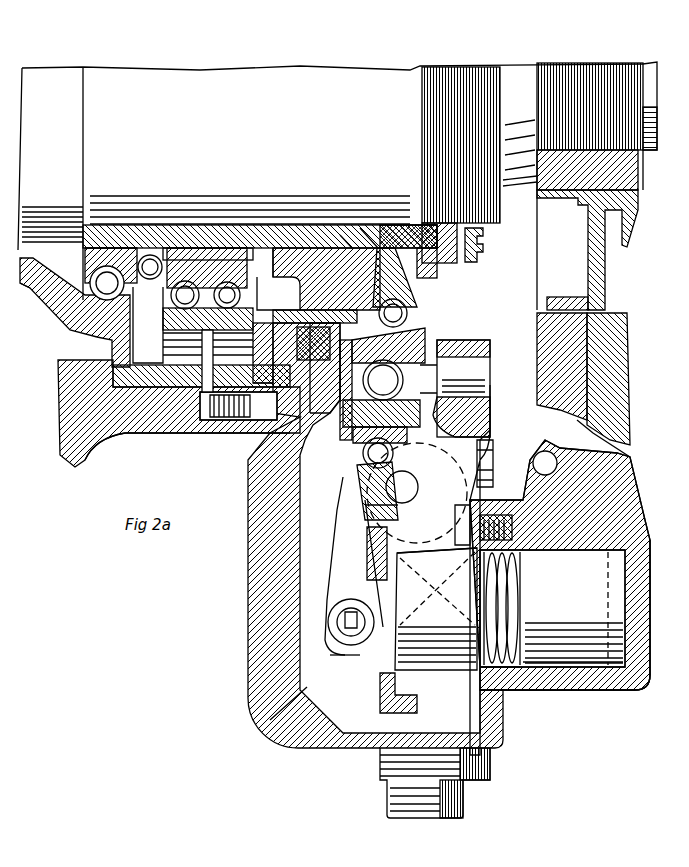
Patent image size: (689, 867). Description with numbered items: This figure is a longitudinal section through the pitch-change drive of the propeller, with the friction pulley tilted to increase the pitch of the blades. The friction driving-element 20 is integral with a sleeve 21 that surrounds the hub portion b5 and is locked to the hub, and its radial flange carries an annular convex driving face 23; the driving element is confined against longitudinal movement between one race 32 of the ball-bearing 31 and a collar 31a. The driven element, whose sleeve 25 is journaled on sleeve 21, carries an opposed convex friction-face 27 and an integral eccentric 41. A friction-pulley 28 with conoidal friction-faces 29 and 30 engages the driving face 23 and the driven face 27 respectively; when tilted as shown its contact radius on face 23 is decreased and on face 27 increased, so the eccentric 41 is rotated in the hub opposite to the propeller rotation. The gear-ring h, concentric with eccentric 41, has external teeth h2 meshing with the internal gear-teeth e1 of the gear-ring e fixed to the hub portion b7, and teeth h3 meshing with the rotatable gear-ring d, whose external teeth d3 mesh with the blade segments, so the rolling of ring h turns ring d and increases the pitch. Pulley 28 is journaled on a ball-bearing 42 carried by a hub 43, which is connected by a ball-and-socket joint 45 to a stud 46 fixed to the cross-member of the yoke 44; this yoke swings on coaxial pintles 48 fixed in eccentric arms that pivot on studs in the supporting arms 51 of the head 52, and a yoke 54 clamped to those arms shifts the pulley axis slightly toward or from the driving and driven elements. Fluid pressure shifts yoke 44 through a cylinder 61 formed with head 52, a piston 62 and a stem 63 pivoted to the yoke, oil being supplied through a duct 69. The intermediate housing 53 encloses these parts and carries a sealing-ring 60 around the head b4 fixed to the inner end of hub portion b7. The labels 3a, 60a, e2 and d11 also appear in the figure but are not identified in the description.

The hub portion b5 is at (337, 259).
The friction driving-element 20 is at (395, 236).
The sleeve 21 is at (388, 232).
The friction-face 27 is at (356, 228).
The conoidal friction-face 29 is at (346, 238).
The collar 31a is at (470, 260).
The head b4 is at (262, 290).
The driving face 23 is at (425, 300).
The hub 43 is at (425, 345).
The universal or ball-and-socket joint 45 is at (381, 401).
The stud 46 is at (455, 388).
The yoke 44 is at (485, 340).
The duct 69 is at (540, 452).
The supporting arms 51 is at (478, 512).
The piston 62 is at (553, 608).
The sealing-ring 60 is at (565, 622).
The cylinder 61 is at (512, 690).
The head 52 is at (592, 690).
The intermediate housing 53 is at (250, 583).
The yoke 54 is at (402, 695).
The ball-bearing 42 is at (362, 455).
The friction-pulley 28 is at (372, 470).
The conoidal friction-face 30 is at (362, 523).
The pintles 48 is at (417, 493).
The stem 63 is at (420, 630).
The plunger head 60a is at (425, 608).
The gear-ring d is at (100, 330).
The external teeth d3 is at (28, 292).
The ball-bearing 31 is at (135, 245).
The race 32 is at (102, 230).
The ball 3a is at (157, 248).
The eccentric 41 is at (205, 258).
The sleeve 25 is at (262, 247).
The gear-ring h is at (160, 328).
The teeth h3 is at (115, 375).
The hub portion b7 is at (95, 455).
The gear-ring e is at (228, 420).
The internal gear-teeth e1 is at (207, 395).
The screw head e2 is at (258, 430).
The clamp base d11 is at (148, 433).
The external teeth h2 is at (165, 430).